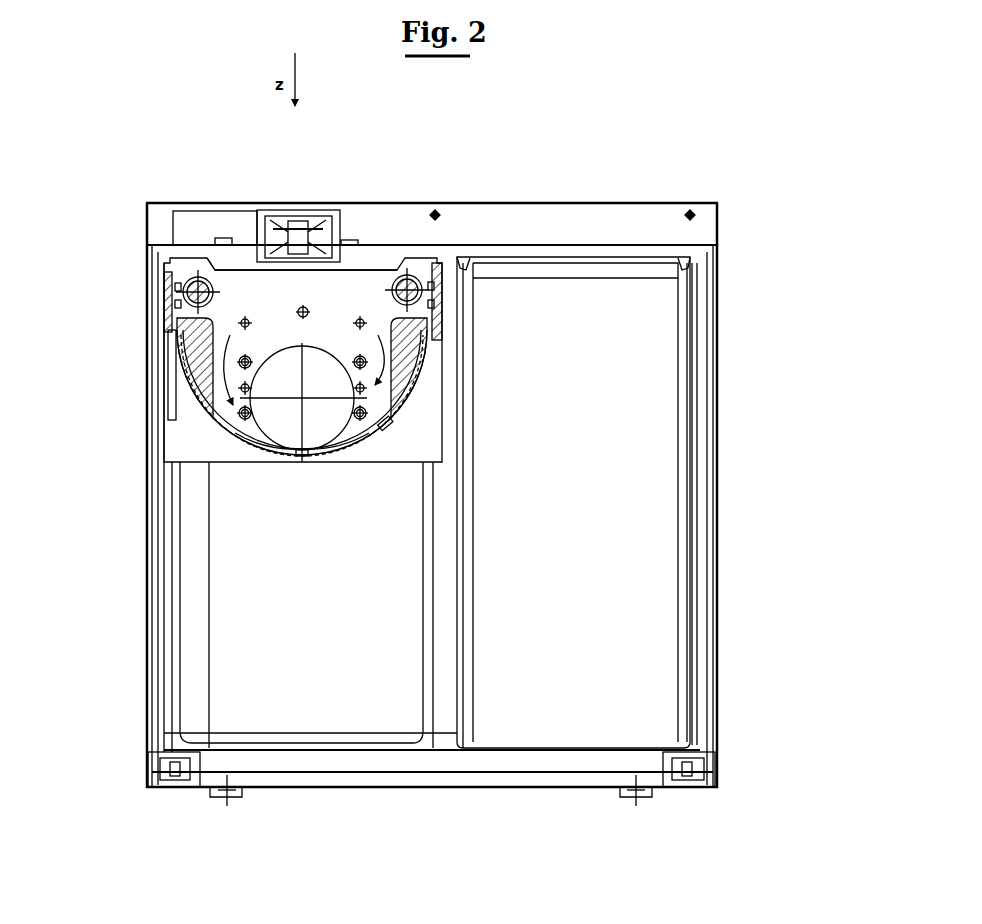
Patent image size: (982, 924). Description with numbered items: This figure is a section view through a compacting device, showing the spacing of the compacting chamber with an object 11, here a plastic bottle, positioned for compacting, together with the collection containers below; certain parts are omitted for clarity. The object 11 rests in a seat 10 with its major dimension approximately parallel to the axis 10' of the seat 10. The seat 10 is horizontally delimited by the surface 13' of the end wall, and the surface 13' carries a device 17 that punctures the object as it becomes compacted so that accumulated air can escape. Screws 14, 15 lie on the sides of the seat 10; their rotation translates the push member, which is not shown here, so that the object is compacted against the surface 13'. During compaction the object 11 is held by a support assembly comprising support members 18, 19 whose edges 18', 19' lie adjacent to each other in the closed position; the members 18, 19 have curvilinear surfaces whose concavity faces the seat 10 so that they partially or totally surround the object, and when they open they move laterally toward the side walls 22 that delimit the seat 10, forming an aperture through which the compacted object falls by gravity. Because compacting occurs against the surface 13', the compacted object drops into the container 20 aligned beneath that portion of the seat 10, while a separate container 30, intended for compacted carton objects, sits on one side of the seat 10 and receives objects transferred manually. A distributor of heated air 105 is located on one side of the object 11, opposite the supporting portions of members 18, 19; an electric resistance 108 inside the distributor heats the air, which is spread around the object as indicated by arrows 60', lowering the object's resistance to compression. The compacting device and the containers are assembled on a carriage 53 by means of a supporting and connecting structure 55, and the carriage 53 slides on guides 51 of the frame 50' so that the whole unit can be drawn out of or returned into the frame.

The housing frame 50' is at (432, 469).
The seat 10 is at (303, 308).
The distributor of heated air 105 is at (345, 258).
The surface of end wall 13' is at (233, 223).
The electric resistance 108 is at (290, 213).
The screw 15 is at (196, 276).
The screw 14 is at (425, 280).
The side walls 22 is at (215, 352).
The supporting and connecting structure 55 is at (205, 377).
The puncturing device 17 is at (247, 413).
The object 11 is at (318, 438).
The axis 10' is at (289, 351).
The container 20 is at (243, 355).
The arrows 60' is at (236, 357).
The support member 18 is at (256, 467).
The edge 18' is at (298, 487).
The support member 19 is at (348, 465).
The edge 19' is at (335, 487).
The carriage 53 is at (307, 752).
The container 30 is at (690, 553).
The guides 51 is at (158, 790).